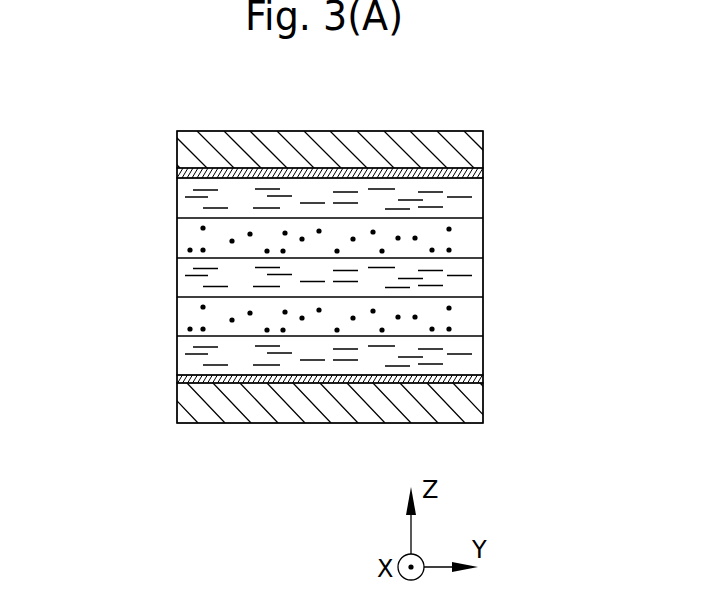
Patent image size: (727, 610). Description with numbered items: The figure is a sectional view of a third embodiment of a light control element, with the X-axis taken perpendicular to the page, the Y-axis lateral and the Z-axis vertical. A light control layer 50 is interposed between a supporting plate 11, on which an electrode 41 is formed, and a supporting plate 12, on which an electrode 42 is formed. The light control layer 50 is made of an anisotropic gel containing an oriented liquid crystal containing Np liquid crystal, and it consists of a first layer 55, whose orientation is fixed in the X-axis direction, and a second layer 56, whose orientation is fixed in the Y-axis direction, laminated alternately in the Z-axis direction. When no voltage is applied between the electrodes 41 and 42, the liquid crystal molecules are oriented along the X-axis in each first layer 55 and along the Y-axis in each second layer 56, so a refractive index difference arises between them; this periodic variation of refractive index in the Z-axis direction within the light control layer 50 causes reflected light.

The supporting plate 11 is at (180, 160).
The supporting plate 12 is at (180, 396).
The electrode 41 is at (480, 174).
The electrode 42 is at (480, 378).
The light control layer 50 is at (317, 274).
The first layer 55 is at (478, 242).
The second layer 56 is at (475, 281).